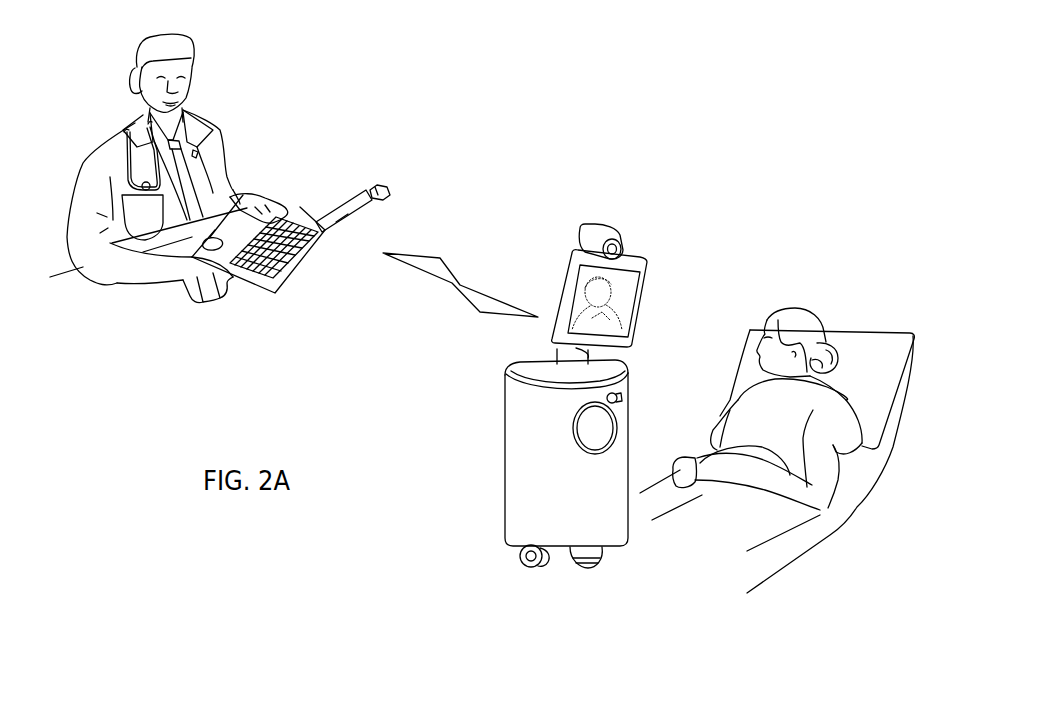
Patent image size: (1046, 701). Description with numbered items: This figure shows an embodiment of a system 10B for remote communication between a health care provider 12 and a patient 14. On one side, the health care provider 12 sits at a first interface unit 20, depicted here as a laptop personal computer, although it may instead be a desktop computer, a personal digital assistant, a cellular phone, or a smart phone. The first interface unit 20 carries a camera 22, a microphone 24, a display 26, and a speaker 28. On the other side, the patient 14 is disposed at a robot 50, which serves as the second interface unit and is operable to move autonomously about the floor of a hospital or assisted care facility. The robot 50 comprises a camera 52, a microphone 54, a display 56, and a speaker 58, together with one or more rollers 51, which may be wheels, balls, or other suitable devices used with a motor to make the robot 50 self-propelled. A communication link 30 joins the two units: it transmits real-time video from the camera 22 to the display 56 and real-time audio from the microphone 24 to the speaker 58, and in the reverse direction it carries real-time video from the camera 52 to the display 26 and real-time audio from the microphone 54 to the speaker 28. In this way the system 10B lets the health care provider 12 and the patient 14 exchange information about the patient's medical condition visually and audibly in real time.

The system 10B is at (650, 101).
The health care provider 12 is at (240, 110).
The patient 14 is at (764, 290).
The first interface unit 20 is at (373, 165).
The camera 22 is at (388, 197).
The microphone 24 is at (250, 210).
The display 26 is at (347, 222).
The speaker 28 is at (193, 231).
The communication link 30 is at (470, 271).
The robot 50 is at (664, 224).
The rollers 51 is at (532, 569).
The camera 52 is at (605, 226).
The microphone 54 is at (625, 396).
The display 56 is at (630, 290).
The speaker 58 is at (596, 440).